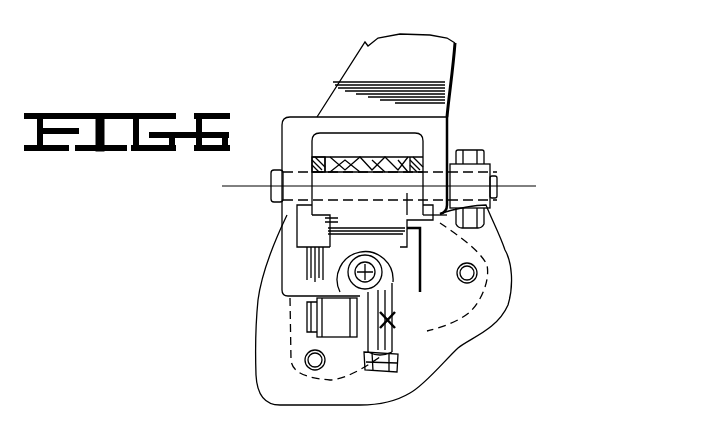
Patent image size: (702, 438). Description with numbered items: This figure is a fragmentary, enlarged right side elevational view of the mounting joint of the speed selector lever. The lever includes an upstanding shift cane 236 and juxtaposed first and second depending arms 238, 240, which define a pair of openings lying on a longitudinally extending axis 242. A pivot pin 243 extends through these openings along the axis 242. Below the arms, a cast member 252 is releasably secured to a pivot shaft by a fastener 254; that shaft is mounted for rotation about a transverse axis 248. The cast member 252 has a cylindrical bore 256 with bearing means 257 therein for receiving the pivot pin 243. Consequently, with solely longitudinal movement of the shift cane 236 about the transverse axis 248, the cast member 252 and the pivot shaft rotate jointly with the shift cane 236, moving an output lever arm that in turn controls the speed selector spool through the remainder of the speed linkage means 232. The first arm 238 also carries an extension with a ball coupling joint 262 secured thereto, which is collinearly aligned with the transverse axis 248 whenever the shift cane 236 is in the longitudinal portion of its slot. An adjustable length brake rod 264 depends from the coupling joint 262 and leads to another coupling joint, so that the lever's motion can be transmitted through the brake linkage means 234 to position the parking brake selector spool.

The speed linkage means 232 is at (335, 316).
The brake linkage means 234 is at (386, 320).
The shift cane 236 is at (446, 60).
The first depending arm 238 is at (290, 152).
The second depending arm 240 is at (446, 128).
The longitudinally extending axis 242 is at (537, 186).
The pivot pin 243 is at (497, 183).
The transverse axis 248 is at (380, 281).
The cast member 252 is at (333, 233).
The fastener 254 is at (420, 312).
The cylindrical bore 256 is at (352, 160).
The bearing means 257 is at (328, 157).
The ball coupling joint 262 is at (372, 266).
The adjustable length brake rod 264 is at (398, 374).